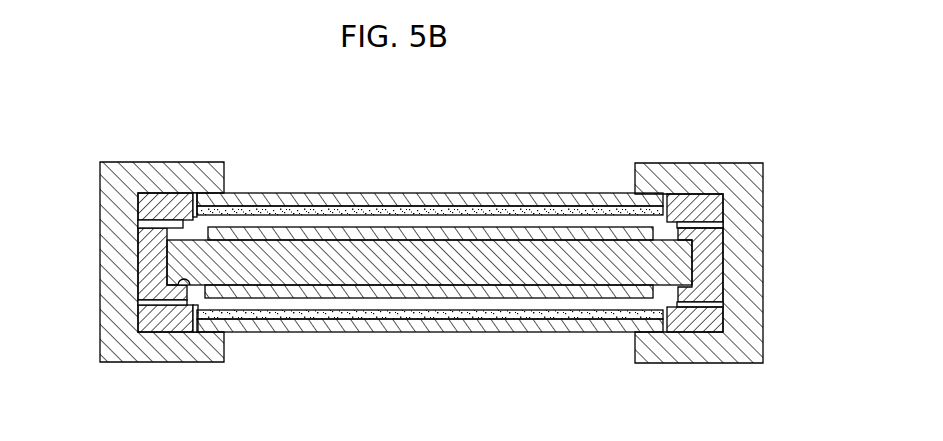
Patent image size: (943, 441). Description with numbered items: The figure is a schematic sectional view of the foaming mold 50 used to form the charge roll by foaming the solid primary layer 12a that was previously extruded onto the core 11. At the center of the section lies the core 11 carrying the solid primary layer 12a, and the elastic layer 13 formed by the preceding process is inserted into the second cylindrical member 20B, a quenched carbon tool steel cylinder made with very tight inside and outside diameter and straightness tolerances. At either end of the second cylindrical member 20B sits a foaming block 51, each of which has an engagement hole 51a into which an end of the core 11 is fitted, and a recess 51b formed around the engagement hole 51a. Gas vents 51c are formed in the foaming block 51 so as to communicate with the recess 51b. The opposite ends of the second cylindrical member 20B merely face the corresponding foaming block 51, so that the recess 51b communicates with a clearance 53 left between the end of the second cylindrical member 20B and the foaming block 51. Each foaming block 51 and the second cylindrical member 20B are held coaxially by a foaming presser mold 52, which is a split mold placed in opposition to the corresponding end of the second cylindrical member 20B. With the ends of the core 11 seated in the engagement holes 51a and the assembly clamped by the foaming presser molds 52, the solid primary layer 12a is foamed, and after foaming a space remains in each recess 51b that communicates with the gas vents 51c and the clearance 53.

The foaming mold 50 is at (232, 107).
The core 11 is at (673, 258).
The solid primary layer 12a is at (462, 236).
The elastic layer 13 is at (374, 212).
The second cylindrical member 20B is at (550, 200).
The foaming block 51 is at (140, 280).
The engagement hole 51a is at (190, 283).
The recess 51b is at (192, 306).
The gas vent 51c is at (138, 247).
The foaming presser mold 52 is at (120, 207).
The clearance 53 is at (195, 221).